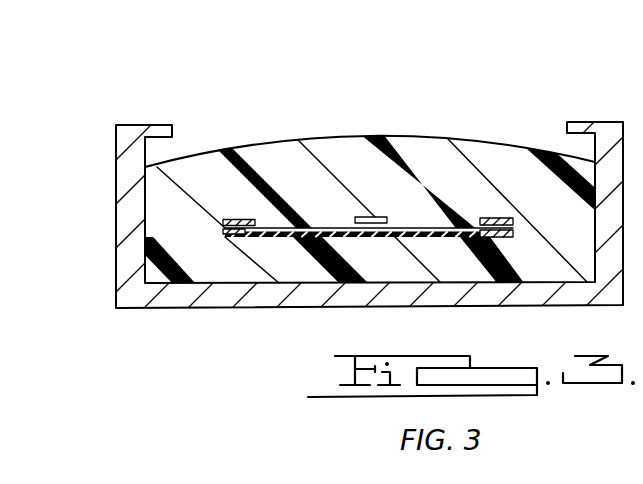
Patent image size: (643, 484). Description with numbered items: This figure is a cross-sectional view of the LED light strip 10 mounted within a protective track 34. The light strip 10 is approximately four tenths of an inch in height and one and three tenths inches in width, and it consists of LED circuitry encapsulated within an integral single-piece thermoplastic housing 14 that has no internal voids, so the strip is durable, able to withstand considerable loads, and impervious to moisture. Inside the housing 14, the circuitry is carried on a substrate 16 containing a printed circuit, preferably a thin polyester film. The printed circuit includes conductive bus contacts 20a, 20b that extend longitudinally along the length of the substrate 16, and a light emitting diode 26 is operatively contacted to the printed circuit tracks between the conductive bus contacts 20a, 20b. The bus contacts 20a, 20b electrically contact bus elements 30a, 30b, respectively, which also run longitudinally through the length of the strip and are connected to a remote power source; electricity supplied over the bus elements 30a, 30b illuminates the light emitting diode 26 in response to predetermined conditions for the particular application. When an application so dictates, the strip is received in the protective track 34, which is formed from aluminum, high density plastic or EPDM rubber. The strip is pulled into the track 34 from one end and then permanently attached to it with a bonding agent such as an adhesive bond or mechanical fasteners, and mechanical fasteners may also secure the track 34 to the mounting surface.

The LED light strip 10 is at (321, 194).
The thermoplastic housing 14 is at (245, 143).
The substrate 16 is at (290, 237).
The conductive bus contact 20a is at (250, 236).
The conductive bus contact 20b is at (490, 237).
The light emitting diode 26 is at (357, 218).
The bus element 30a is at (235, 220).
The bus element 30b is at (490, 218).
The protective track 34 is at (128, 127).